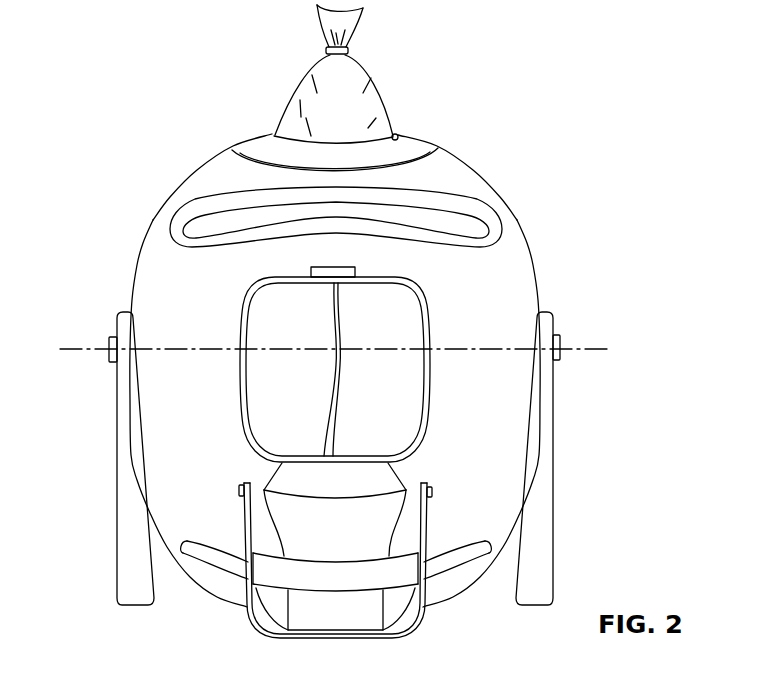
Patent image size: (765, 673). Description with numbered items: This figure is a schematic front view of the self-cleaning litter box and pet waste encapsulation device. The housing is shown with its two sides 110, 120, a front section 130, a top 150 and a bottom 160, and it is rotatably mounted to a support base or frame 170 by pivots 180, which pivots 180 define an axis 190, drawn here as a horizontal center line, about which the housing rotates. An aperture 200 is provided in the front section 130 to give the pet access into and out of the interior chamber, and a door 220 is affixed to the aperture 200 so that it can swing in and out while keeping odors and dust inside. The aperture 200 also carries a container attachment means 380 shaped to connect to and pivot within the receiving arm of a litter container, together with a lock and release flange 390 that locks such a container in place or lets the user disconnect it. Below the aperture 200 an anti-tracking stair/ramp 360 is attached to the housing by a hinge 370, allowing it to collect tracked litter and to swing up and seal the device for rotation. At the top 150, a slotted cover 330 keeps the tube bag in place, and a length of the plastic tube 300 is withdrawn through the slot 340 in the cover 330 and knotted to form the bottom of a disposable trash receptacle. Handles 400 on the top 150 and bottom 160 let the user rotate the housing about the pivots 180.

The side 110 is at (139, 272).
The side 120 is at (533, 268).
The top 150 is at (467, 158).
The plastic tube 300 is at (380, 95).
The slot 340 is at (398, 134).
The slotted cover 330 is at (257, 148).
The handles 400 is at (247, 232).
The front section 130 is at (340, 263).
The lock and release flange 390 is at (357, 270).
The container attachment means 380 is at (243, 330).
The door 220 is at (310, 404).
The aperture 200 is at (362, 339).
The anti-tracking stair/ramp 360 is at (362, 544).
The bottom 160 is at (430, 607).
The hinge 370 is at (239, 490).
The support base or frame 170 is at (117, 406).
The pivots 180 is at (560, 340).
The axis 190 is at (70, 348).